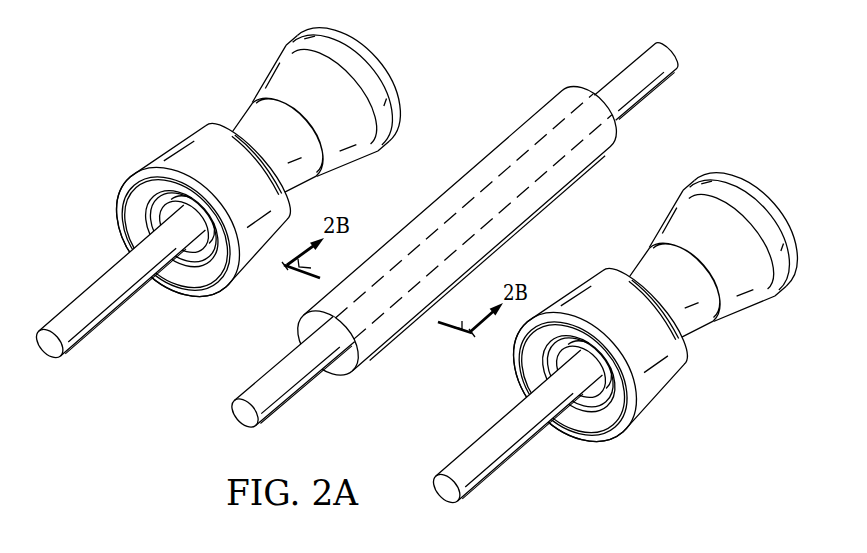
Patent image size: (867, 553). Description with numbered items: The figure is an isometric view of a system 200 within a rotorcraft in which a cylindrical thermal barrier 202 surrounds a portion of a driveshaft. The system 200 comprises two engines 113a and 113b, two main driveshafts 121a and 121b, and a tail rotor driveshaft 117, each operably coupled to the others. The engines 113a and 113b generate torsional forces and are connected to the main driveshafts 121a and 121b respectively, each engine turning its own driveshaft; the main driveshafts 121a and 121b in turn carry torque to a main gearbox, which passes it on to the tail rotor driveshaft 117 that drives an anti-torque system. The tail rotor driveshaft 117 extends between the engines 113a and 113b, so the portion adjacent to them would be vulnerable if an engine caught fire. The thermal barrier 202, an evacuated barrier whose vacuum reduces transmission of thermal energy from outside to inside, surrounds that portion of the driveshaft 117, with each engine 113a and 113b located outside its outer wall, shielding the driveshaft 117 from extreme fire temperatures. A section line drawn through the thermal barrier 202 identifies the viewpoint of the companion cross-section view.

The system 200 is at (149, 63).
The engine 113a is at (162, 150).
The engine 113b is at (647, 414).
The main driveshaft 121a is at (92, 280).
The main driveshaft 121b is at (500, 467).
The thermal barrier 202 is at (486, 132).
The tail rotor driveshaft 117 is at (272, 367).